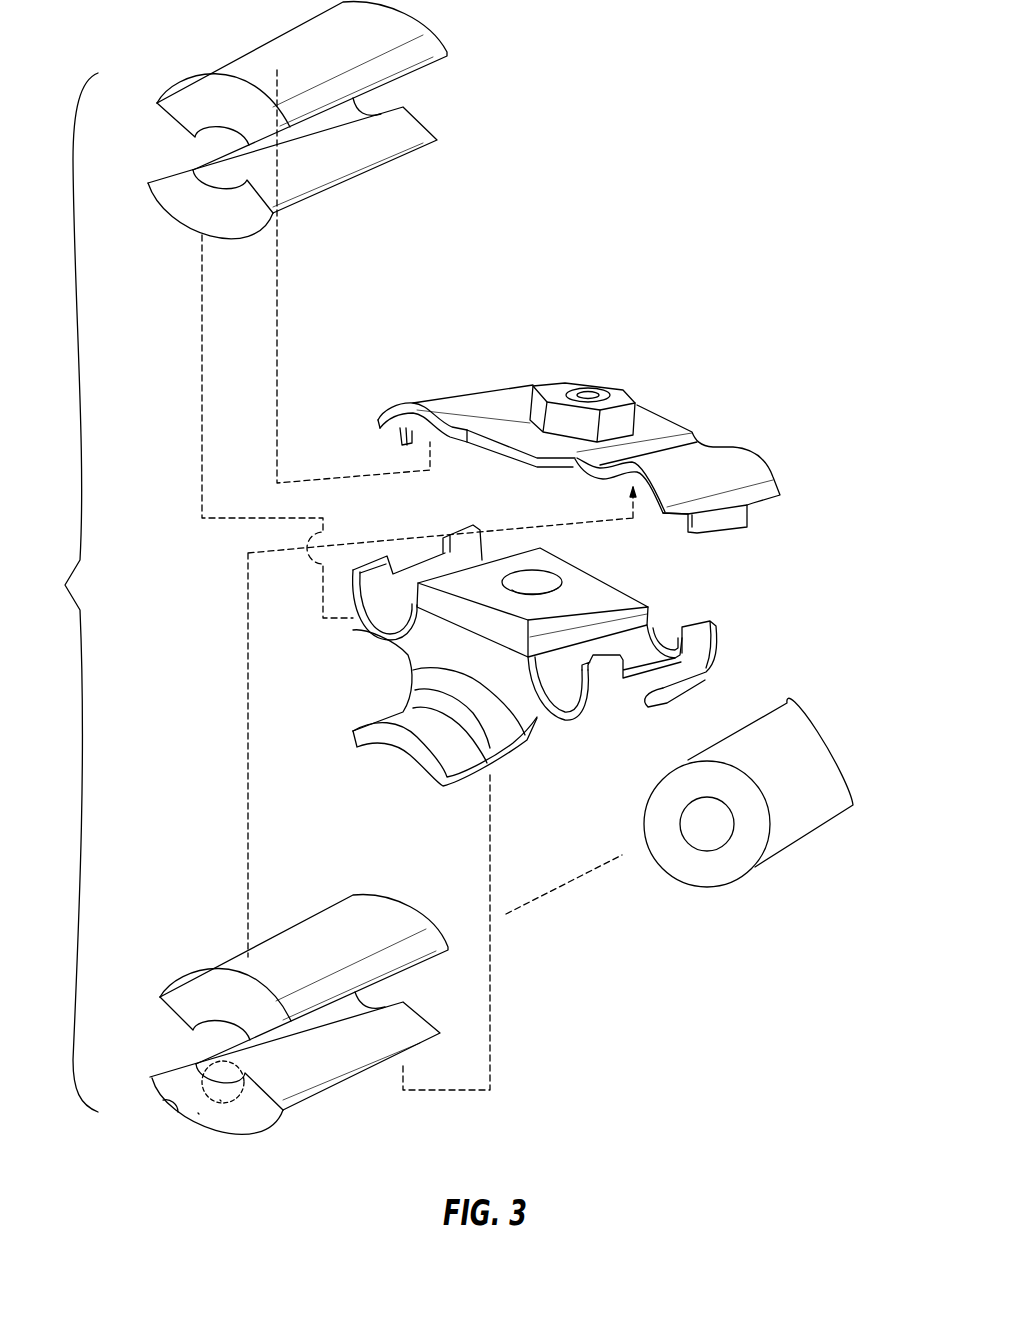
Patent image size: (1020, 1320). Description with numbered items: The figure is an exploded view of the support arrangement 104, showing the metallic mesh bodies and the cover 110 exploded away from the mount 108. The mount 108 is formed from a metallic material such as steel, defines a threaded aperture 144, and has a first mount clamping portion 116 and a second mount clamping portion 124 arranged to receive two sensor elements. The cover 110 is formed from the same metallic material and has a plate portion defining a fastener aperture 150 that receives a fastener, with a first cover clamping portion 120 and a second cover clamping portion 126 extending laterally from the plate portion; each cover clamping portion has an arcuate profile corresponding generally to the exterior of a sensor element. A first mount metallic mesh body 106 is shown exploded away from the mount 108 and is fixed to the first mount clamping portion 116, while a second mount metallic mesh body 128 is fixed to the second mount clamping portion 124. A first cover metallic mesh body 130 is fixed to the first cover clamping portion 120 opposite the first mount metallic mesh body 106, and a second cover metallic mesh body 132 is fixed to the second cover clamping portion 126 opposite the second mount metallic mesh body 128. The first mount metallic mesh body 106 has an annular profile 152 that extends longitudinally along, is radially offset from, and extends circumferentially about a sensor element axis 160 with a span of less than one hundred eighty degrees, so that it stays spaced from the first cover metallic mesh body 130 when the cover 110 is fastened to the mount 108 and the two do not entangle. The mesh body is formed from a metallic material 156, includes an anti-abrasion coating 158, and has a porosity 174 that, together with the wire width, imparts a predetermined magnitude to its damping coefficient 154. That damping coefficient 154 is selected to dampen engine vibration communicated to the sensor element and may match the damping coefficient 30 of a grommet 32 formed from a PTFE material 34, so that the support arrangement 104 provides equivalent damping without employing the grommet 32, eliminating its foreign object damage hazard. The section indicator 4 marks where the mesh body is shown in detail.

The section line 4 is at (220, 1100).
The damping coefficient 30 is at (783, 778).
The grommet 32 is at (807, 850).
The PTFE material 34 is at (812, 790).
The support arrangement 104 is at (60, 592).
The first mount metallic mesh body 106 is at (198, 1113).
The mount 108 is at (501, 665).
The cover 110 is at (613, 440).
The first mount clamping portion 116 is at (605, 703).
The first cover clamping portion 120 is at (757, 452).
The second mount clamping portion 124 is at (363, 629).
The second cover clamping portion 126 is at (477, 395).
The second mount metallic mesh body 128 is at (302, 194).
The first cover metallic mesh body 130 is at (267, 1035).
The second cover metallic mesh body 132 is at (427, 50).
The threaded aperture 144 is at (573, 551).
The fastener aperture 150 is at (655, 425).
The annular profile 152 is at (177, 1112).
The damping coefficient 154 is at (267, 1122).
The metallic material 156 is at (404, 1002).
The anti-abrasion coating 158 is at (273, 1083).
The sensor element axis 160 is at (551, 893).
The porosity 174 is at (418, 1045).